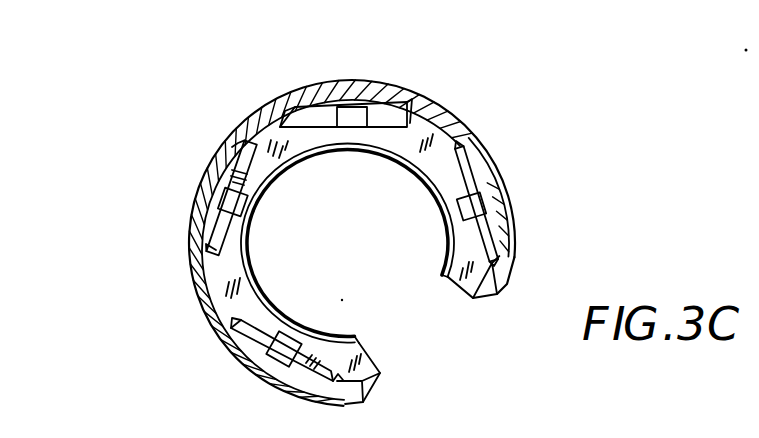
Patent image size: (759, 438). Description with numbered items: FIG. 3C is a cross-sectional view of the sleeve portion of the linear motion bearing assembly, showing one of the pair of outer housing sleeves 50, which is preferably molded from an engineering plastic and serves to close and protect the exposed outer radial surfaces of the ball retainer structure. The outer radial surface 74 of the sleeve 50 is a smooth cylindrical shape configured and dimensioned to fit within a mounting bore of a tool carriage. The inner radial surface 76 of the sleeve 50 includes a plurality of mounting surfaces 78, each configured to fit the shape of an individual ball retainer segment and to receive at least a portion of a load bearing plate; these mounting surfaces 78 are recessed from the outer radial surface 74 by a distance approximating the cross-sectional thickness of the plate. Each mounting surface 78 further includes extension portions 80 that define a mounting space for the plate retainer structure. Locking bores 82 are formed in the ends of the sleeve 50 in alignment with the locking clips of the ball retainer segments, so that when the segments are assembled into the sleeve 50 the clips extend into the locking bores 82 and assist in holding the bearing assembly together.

The outer housing sleeve 50 is at (457, 113).
The outer radial surface 74 is at (250, 136).
The inner radial surface 76 is at (423, 168).
The mounting surface 78 is at (317, 120).
The extension portion 80 is at (243, 143).
The locking bore 82 is at (510, 183).